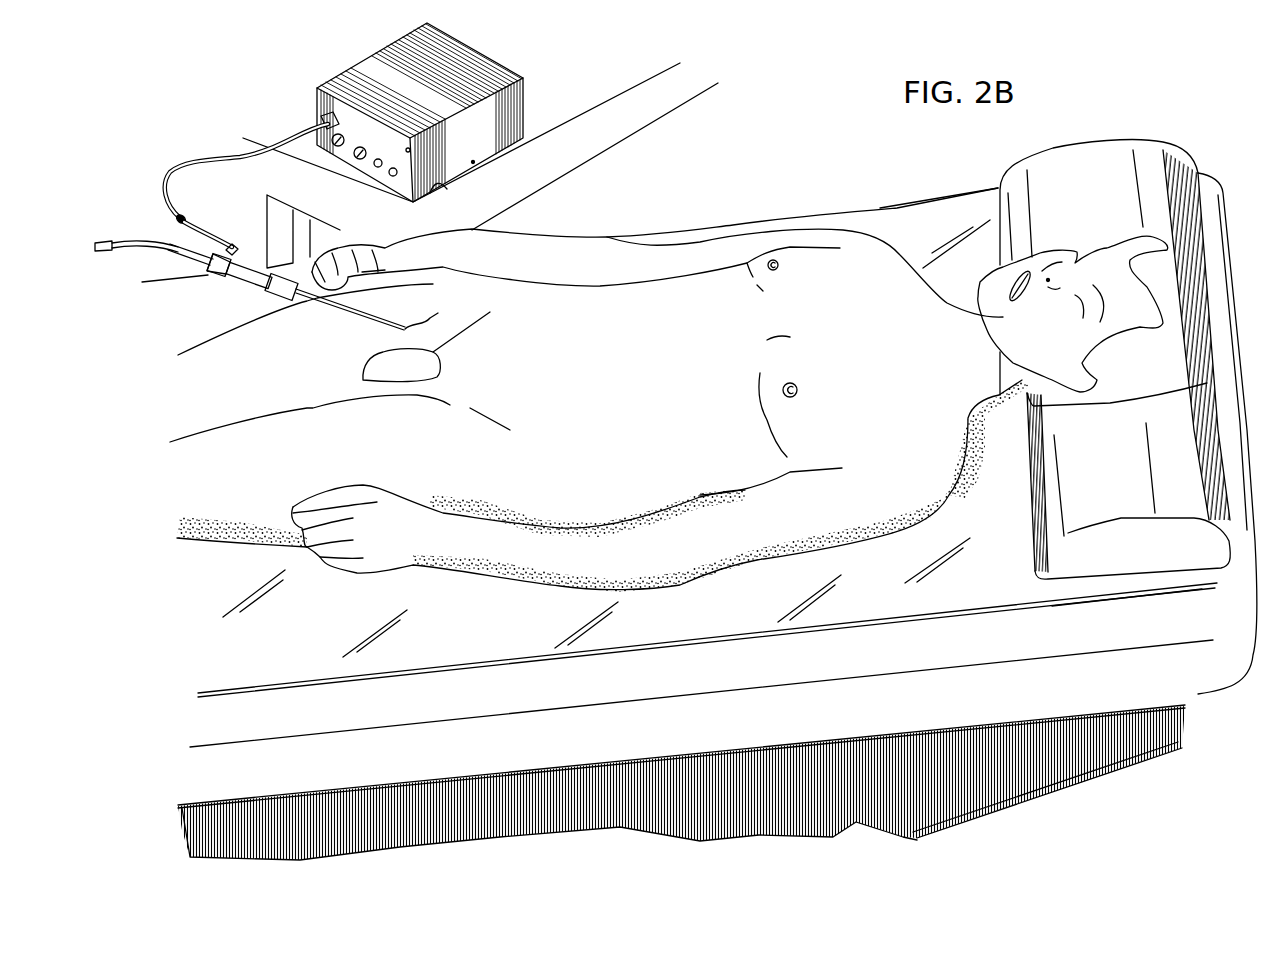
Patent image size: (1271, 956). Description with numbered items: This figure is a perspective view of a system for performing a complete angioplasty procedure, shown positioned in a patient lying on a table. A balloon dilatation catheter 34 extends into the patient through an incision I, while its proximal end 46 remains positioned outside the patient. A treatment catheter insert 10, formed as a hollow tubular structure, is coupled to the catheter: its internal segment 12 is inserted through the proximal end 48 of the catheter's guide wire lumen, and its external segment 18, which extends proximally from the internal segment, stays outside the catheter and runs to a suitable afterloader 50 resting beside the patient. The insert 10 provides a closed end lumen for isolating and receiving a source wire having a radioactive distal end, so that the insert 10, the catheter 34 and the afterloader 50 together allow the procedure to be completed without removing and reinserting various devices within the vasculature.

The treatment catheter insert 10 is at (158, 185).
The internal segment 12 is at (221, 242).
The external segment 18 is at (246, 174).
The balloon dilatation catheter 34 is at (185, 275).
The proximal end of catheter 46 is at (330, 300).
The proximal end of guide wire lumen 48 is at (242, 257).
The afterloader 50 is at (478, 72).
The incision I is at (425, 315).